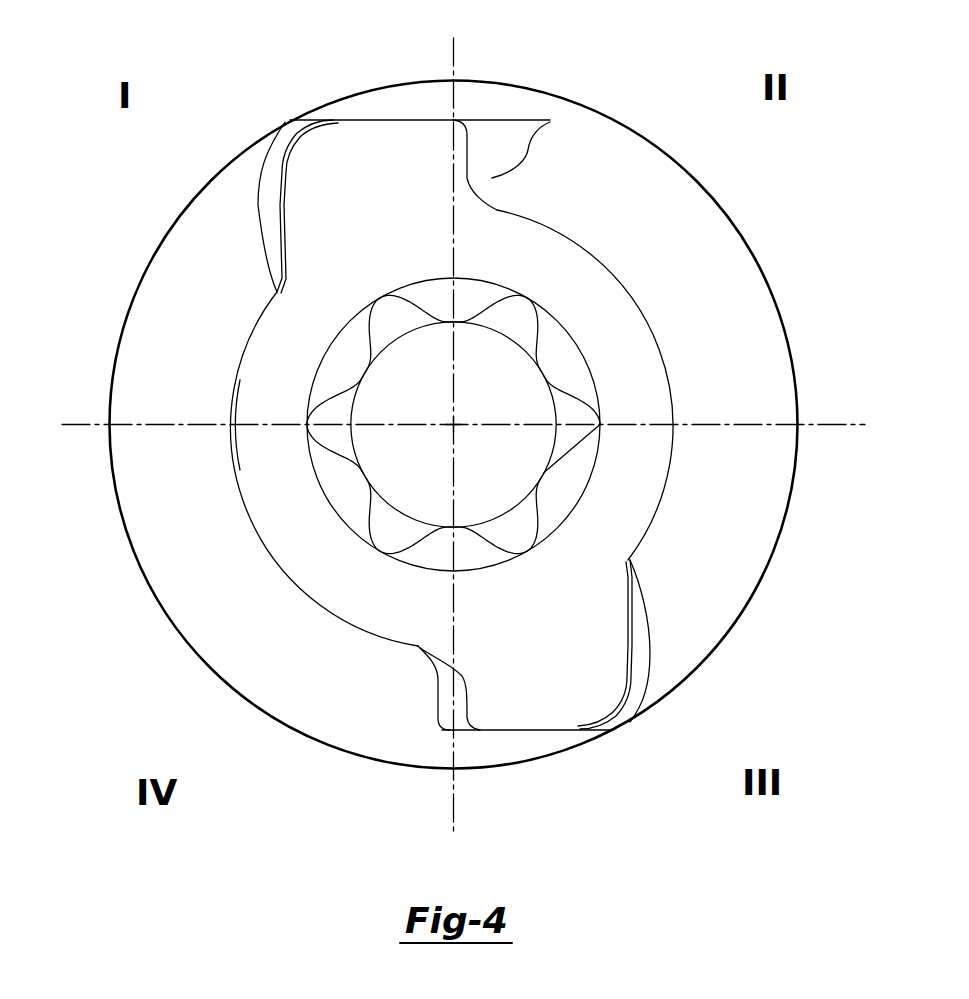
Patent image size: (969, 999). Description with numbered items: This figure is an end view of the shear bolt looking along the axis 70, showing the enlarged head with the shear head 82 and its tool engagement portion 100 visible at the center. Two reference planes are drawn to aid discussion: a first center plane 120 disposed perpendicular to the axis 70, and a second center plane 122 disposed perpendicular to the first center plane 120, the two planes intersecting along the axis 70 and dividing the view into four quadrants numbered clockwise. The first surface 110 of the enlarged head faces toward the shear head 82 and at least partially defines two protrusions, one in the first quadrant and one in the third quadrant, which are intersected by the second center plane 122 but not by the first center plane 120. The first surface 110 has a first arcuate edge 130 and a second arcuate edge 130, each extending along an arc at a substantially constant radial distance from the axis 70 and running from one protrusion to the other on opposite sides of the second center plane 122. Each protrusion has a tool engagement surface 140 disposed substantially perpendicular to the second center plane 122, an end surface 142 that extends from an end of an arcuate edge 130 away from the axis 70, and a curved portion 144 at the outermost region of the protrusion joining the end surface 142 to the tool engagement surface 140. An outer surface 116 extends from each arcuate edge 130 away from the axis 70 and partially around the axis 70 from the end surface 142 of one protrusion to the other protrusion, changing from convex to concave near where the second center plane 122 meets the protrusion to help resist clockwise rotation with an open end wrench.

The axis 70 is at (455, 422).
The shear head 82 is at (453, 396).
The tool engagement portion 100 is at (425, 285).
The first surface 110 is at (300, 364).
The outer surface 116 is at (772, 337).
The first center plane 120 is at (840, 426).
The second center plane 122 is at (456, 62).
The arcuate edge 130 is at (648, 312).
The tool engagement surface 140 is at (385, 118).
The end surface 142 is at (267, 195).
The curved portion 144 is at (287, 130).